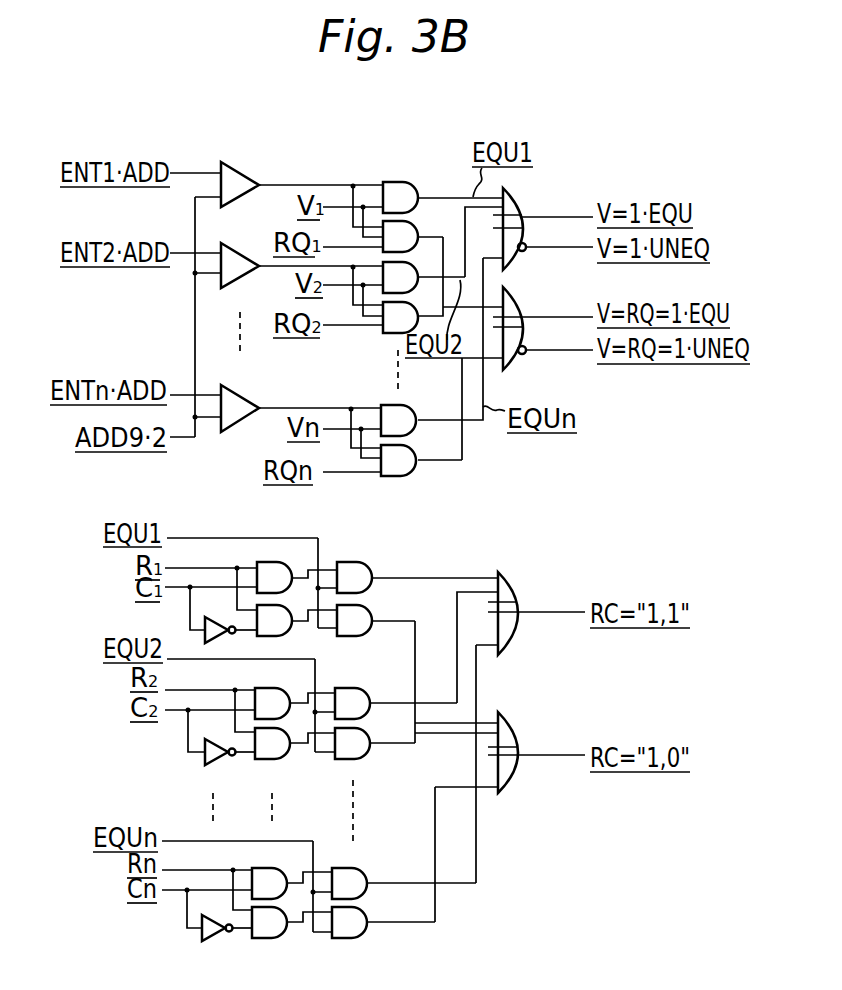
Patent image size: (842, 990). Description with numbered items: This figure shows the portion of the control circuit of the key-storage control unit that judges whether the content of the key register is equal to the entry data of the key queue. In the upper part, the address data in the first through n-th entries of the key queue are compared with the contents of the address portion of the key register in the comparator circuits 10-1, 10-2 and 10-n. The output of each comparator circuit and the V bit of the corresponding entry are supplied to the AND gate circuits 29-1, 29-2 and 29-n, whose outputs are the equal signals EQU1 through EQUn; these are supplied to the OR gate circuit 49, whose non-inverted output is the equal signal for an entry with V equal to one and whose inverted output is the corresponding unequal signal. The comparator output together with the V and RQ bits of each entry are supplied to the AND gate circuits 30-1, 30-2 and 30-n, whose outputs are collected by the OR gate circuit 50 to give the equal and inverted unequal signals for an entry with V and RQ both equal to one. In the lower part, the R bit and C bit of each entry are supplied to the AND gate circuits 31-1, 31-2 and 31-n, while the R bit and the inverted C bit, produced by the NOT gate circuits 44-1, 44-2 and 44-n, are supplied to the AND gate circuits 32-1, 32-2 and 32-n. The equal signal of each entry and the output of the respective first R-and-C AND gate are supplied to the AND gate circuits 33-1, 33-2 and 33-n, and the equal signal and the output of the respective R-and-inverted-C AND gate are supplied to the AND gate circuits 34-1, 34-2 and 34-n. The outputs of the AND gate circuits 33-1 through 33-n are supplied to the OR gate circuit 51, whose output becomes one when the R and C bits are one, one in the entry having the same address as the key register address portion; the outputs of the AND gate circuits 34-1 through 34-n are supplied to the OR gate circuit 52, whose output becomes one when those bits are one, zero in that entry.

The comparator circuit 10-1 is at (241, 175).
The comparator circuit 10-2 is at (241, 255).
The comparator circuit 10-n is at (241, 398).
The AND gate circuit 29-1 is at (399, 182).
The AND gate circuit 29-2 is at (410, 263).
The AND gate circuit 29-n is at (421, 398).
The AND gate circuit 30-1 is at (413, 225).
The AND gate circuit 30-2 is at (383, 338).
The AND gate circuit 30-n is at (414, 476).
The OR gate circuit 49 is at (521, 200).
The OR gate circuit 50 is at (521, 302).
The AND gate circuit 31-1 is at (275, 562).
The AND gate circuit 31-2 is at (275, 688).
The AND gate circuit 31-n is at (272, 868).
The AND gate circuit 32-1 is at (273, 637).
The AND gate circuit 32-2 is at (272, 760).
The AND gate circuit 32-n is at (270, 937).
The AND gate circuit 33-1 is at (363, 562).
The AND gate circuit 33-2 is at (354, 673).
The AND gate circuit 33-n is at (365, 868).
The AND gate circuit 34-1 is at (350, 637).
The AND gate circuit 34-2 is at (360, 760).
The AND gate circuit 34-n is at (357, 937).
The NOT gate circuit 44-1 is at (205, 640).
The NOT gate circuit 44-2 is at (218, 763).
The NOT gate circuit 44-n is at (220, 941).
The OR gate circuit 51 is at (515, 593).
The OR gate circuit 52 is at (515, 730).